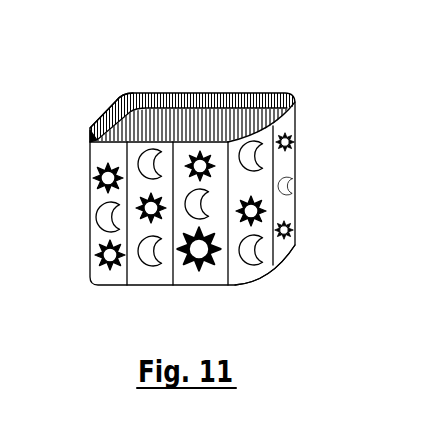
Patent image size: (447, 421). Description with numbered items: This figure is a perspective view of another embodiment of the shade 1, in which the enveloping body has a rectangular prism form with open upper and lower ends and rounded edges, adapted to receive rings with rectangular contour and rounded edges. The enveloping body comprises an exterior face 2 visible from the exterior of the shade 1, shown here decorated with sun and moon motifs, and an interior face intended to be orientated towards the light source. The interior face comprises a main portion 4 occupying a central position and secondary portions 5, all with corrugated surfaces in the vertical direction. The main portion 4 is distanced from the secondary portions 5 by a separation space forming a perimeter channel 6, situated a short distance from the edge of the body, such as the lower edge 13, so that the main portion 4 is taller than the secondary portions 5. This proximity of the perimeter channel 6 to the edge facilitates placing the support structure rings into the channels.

The shade 1 is at (79, 72).
The exterior face 2 is at (188, 275).
The main portion 4 is at (142, 126).
The secondary portion 5 is at (171, 99).
The perimeter channel 6 is at (213, 105).
The lower edge 13 is at (262, 268).